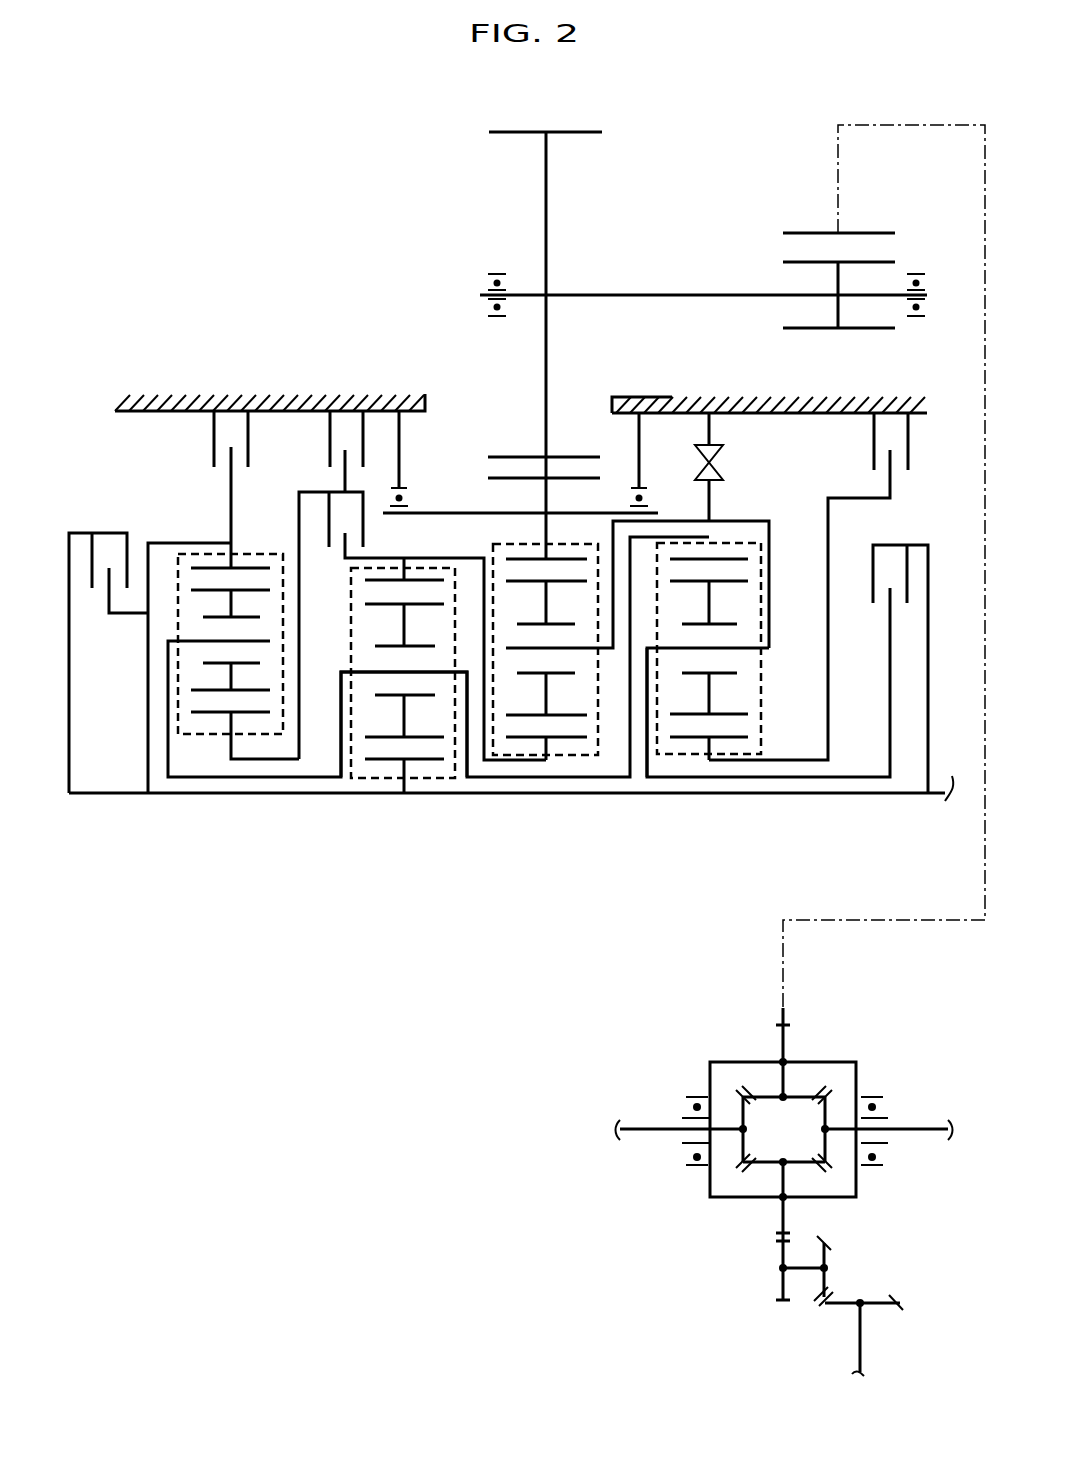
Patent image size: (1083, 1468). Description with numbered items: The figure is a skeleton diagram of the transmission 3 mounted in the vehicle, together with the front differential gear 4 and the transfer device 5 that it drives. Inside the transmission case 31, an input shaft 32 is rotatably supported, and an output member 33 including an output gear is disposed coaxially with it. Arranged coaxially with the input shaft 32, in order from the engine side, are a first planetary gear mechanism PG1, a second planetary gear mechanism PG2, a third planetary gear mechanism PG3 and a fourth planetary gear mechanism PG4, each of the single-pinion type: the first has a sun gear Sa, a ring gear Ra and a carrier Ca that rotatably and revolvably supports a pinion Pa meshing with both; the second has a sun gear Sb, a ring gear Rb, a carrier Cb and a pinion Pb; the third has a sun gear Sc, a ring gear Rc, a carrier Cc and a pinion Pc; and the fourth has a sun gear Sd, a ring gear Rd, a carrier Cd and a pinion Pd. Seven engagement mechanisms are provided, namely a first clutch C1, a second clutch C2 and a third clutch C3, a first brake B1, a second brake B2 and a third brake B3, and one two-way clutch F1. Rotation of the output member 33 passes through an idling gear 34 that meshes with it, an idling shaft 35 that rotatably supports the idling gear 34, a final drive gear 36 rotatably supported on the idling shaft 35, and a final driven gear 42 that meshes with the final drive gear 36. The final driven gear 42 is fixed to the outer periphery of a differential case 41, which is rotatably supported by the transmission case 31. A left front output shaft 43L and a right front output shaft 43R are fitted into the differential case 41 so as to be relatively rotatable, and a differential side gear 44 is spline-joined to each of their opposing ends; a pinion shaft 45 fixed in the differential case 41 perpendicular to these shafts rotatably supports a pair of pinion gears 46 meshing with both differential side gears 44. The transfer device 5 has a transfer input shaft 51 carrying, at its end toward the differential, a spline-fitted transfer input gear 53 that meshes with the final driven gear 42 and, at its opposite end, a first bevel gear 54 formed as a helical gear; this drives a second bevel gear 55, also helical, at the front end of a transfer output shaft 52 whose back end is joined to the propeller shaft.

The transmission 3 is at (298, 258).
The transmission case 31 is at (188, 396).
The input shaft 32 is at (951, 802).
The output member 33 is at (600, 478).
The idling gear 34 is at (518, 130).
The idling shaft 35 is at (670, 293).
The final drive gear 36 is at (784, 258).
The front differential gear 4 is at (930, 1060).
The differential case 41 is at (840, 1062).
The final driven gear 42 is at (868, 237).
The left front output shaft 43L is at (643, 1135).
The right front output shaft 43R is at (876, 1130).
The differential side gear 44 is at (732, 1102).
The pinion shaft 45 is at (786, 1078).
The pinion gear 46 is at (740, 1097).
The transfer device 5 is at (912, 1242).
The transfer input shaft 51 is at (807, 1275).
The transfer output shaft 52 is at (862, 1333).
The transfer input gear 53 is at (782, 1301).
The first bevel gear 54 is at (832, 1244).
The second bevel gear 55 is at (897, 1301).
The first brake B1 is at (808, 586).
The second brake B2 is at (346, 452).
The third brake B3 is at (231, 489).
The first clutch C1 is at (787, 669).
The second clutch C2 is at (422, 626).
The third clutch C3 is at (150, 663).
The two-way clutch F1 is at (732, 462).
The first planetary gear mechanism PG1 is at (692, 775).
The second planetary gear mechanism PG2 is at (515, 775).
The third planetary gear mechanism PG3 is at (372, 782).
The fourth planetary gear mechanism PG4 is at (246, 542).
The ring gear Ra is at (722, 558).
The ring gear Rb is at (562, 567).
The ring gear Rc is at (373, 583).
The ring gear Rd is at (258, 567).
The carrier Ca is at (755, 648).
The carrier Cb is at (572, 648).
The carrier Cc is at (441, 672).
The carrier Cd is at (206, 641).
The pinion Pa is at (740, 714).
The pinion Pb is at (570, 715).
The pinion Pc is at (410, 737).
The pinion Pd is at (206, 690).
The sun gear Sa is at (727, 742).
The sun gear Sb is at (566, 741).
The sun gear Sc is at (430, 761).
The sun gear Sd is at (203, 715).